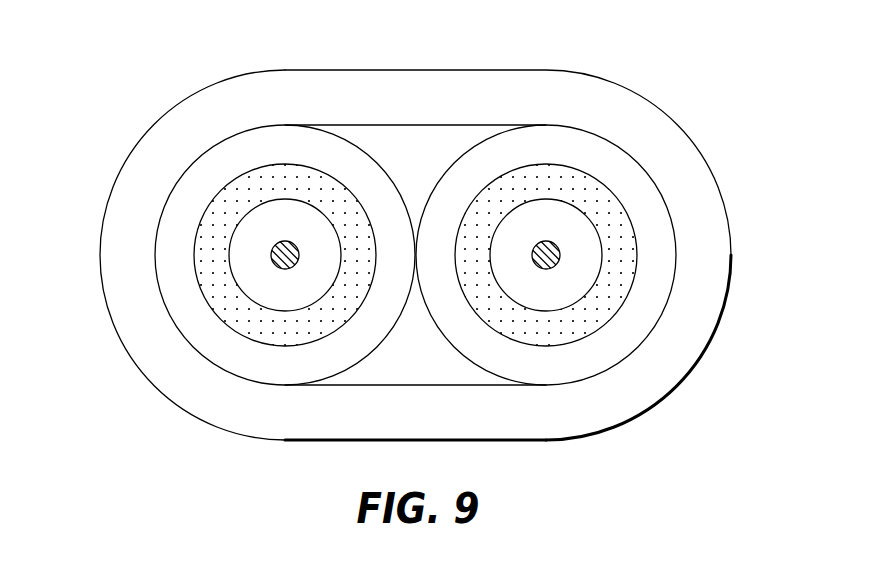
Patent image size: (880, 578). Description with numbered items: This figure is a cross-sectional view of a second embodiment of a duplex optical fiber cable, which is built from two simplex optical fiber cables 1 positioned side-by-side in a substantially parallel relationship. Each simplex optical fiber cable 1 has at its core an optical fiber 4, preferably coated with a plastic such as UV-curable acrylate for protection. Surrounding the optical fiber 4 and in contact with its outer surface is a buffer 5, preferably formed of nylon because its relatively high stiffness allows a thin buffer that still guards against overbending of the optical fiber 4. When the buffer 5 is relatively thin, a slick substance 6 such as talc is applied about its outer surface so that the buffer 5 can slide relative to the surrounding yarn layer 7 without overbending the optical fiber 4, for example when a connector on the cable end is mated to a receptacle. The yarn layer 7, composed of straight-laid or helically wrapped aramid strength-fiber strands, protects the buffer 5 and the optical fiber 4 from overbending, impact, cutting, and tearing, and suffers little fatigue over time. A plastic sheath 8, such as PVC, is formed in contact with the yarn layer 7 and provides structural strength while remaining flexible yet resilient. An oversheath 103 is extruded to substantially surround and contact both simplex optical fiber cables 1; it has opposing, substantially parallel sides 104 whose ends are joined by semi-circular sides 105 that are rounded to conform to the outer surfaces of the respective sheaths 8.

The optical fiber cable 1 is at (252, 110).
The optical fiber 4 is at (283, 240).
The buffer 5 is at (413, 222).
The substance 6 is at (230, 243).
The yarn layer 7 is at (213, 255).
The sheath 8 is at (182, 273).
The oversheath 103 is at (462, 53).
The substantially parallel sides 104 is at (360, 80).
The semi-circular sides 105 is at (158, 353).